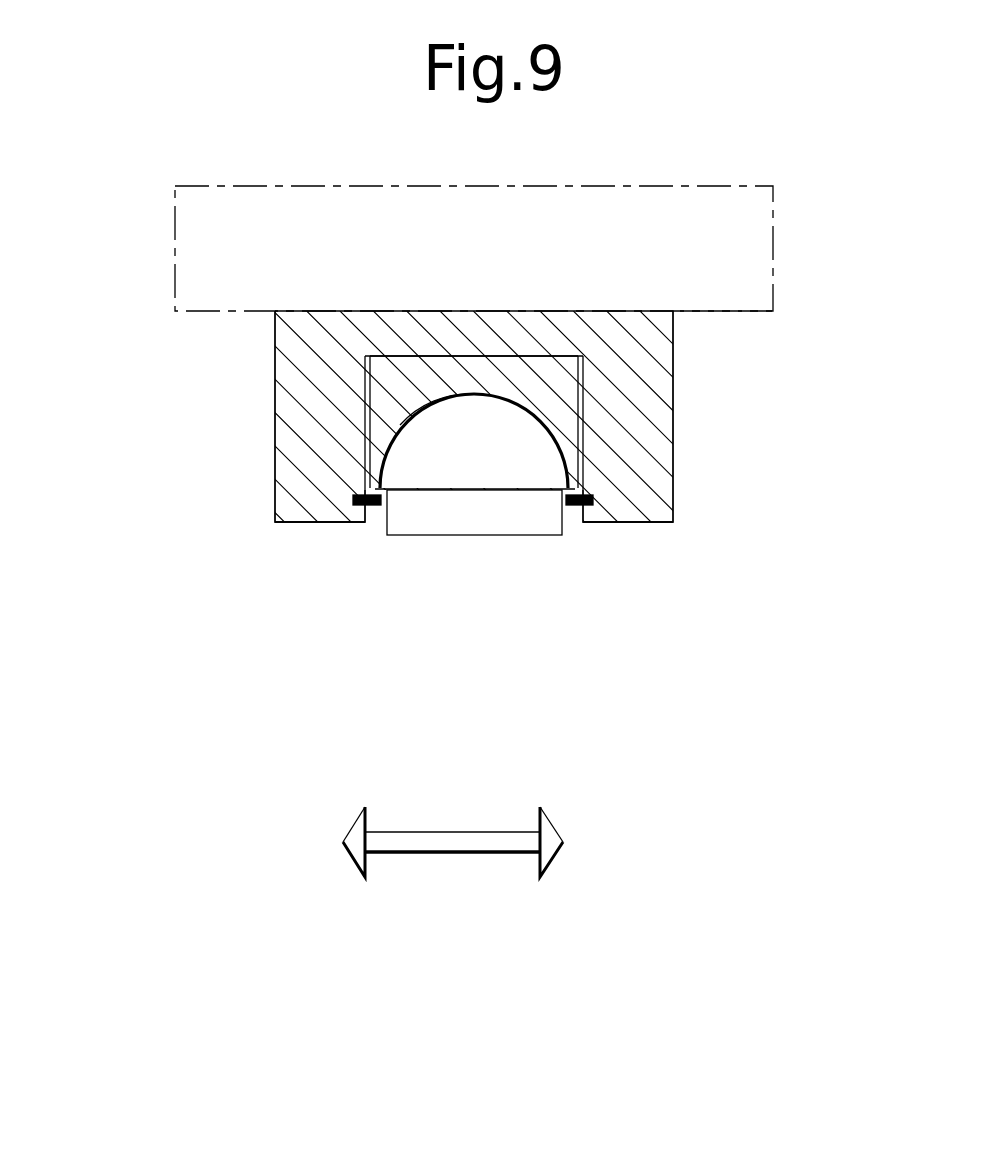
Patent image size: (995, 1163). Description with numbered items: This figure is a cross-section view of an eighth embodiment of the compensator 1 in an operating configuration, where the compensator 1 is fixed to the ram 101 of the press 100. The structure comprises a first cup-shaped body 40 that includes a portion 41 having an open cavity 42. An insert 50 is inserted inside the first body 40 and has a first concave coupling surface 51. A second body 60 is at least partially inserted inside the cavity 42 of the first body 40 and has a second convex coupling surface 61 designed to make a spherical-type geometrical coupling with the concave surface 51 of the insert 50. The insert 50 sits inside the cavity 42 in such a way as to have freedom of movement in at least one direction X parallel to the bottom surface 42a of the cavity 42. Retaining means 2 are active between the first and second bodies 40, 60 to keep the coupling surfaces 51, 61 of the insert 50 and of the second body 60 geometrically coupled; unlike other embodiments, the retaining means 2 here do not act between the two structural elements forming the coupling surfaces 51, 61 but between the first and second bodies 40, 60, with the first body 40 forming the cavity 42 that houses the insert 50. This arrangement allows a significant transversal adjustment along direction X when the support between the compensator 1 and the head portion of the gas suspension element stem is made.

The press 100 is at (158, 207).
The ram 101 is at (748, 312).
The compensator 1 is at (697, 414).
The first cup-shaped body 40 is at (255, 399).
The bottom surface of the cavity 42a is at (520, 357).
The open cavity 42 is at (371, 542).
The portion 41 is at (603, 542).
The retaining means 2 is at (338, 488).
The insert 50 is at (563, 398).
The first concave coupling surface 51 is at (517, 408).
The second convex coupling surface 61 is at (432, 405).
The second body 60 is at (452, 542).
The direction of movement X is at (463, 838).